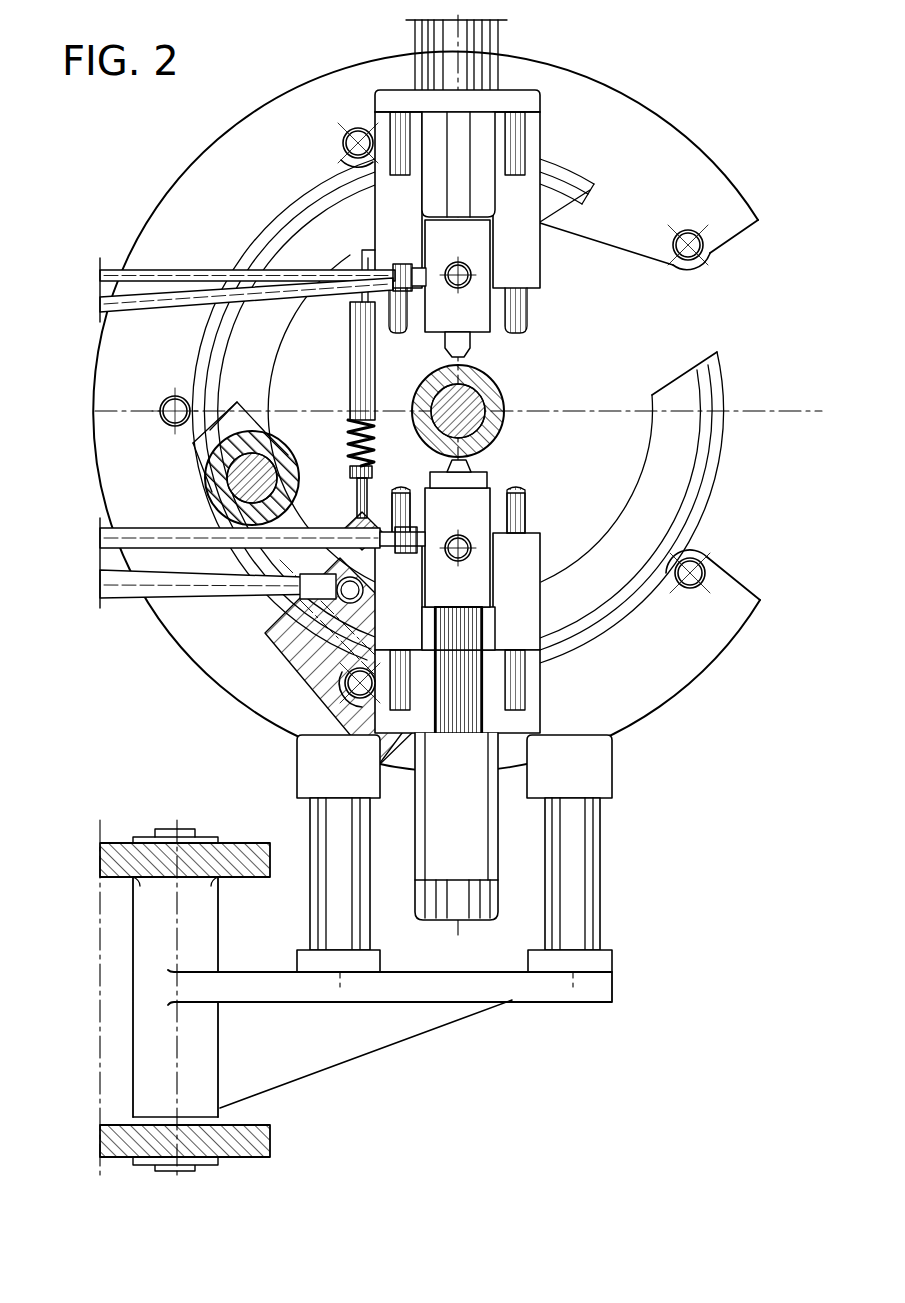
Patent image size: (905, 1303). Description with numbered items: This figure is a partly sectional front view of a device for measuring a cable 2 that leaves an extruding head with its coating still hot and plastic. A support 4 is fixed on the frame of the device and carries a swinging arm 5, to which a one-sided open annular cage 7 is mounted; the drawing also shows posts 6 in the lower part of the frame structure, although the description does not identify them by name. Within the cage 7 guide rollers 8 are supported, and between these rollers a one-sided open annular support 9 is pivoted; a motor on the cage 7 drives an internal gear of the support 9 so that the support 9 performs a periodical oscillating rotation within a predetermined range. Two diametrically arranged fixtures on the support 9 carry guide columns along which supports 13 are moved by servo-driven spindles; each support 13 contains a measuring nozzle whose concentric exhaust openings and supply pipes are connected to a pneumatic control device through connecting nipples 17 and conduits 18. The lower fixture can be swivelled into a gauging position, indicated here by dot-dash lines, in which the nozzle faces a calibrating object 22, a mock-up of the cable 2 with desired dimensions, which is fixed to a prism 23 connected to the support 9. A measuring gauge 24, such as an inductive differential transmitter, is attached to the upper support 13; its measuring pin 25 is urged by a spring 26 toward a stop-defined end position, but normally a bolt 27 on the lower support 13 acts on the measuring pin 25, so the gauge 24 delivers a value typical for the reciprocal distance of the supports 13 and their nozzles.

The cable 2 is at (490, 396).
The support 4 is at (125, 1125).
The swinging arm 5 is at (438, 1012).
The guide posts 6 is at (322, 825).
The annular cage 7 is at (715, 175).
The guide rollers 8 is at (352, 160).
The annular support 9 is at (722, 432).
The supports 13 is at (520, 262).
The connecting nipples 17 is at (445, 285).
The conduits 18 is at (180, 275).
The calibrating object 22 is at (265, 455).
The prism 23 is at (200, 445).
The measuring gauge 24 is at (358, 337).
The measuring pin 25 is at (358, 466).
The spring 26 is at (358, 430).
The bolt 27 is at (375, 495).